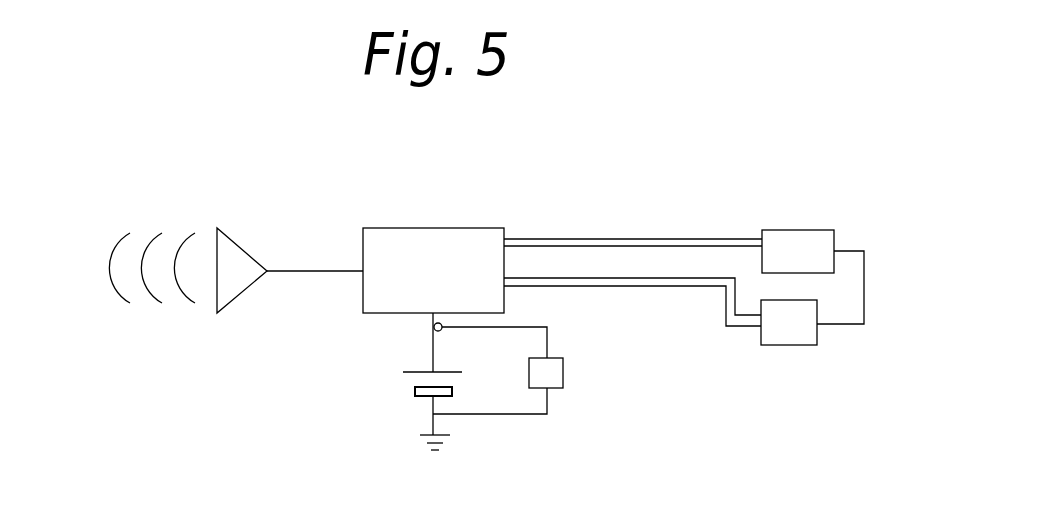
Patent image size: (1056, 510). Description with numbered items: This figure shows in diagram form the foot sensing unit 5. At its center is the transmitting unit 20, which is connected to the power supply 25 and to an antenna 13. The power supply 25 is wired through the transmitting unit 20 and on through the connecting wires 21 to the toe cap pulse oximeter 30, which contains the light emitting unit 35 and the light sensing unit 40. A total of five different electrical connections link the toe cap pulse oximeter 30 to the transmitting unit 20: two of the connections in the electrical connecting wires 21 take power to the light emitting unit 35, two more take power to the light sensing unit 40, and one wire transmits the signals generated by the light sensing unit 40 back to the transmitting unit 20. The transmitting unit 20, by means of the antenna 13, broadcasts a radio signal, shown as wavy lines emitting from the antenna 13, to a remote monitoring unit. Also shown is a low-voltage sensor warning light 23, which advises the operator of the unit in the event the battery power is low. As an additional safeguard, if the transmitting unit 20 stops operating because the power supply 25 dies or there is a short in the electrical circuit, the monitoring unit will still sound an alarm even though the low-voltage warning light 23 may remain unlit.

The foot sensing unit 5 is at (333, 352).
The antenna 13 is at (162, 313).
The transmitting unit 20 is at (425, 227).
The connecting wires 21 is at (547, 232).
The low-voltage sensor warning light 23 is at (555, 393).
The power supply 25 is at (412, 415).
The toe cap pulse oximeter 30 is at (895, 285).
The light emitting unit 35 is at (830, 213).
The light sensing unit 40 is at (813, 346).